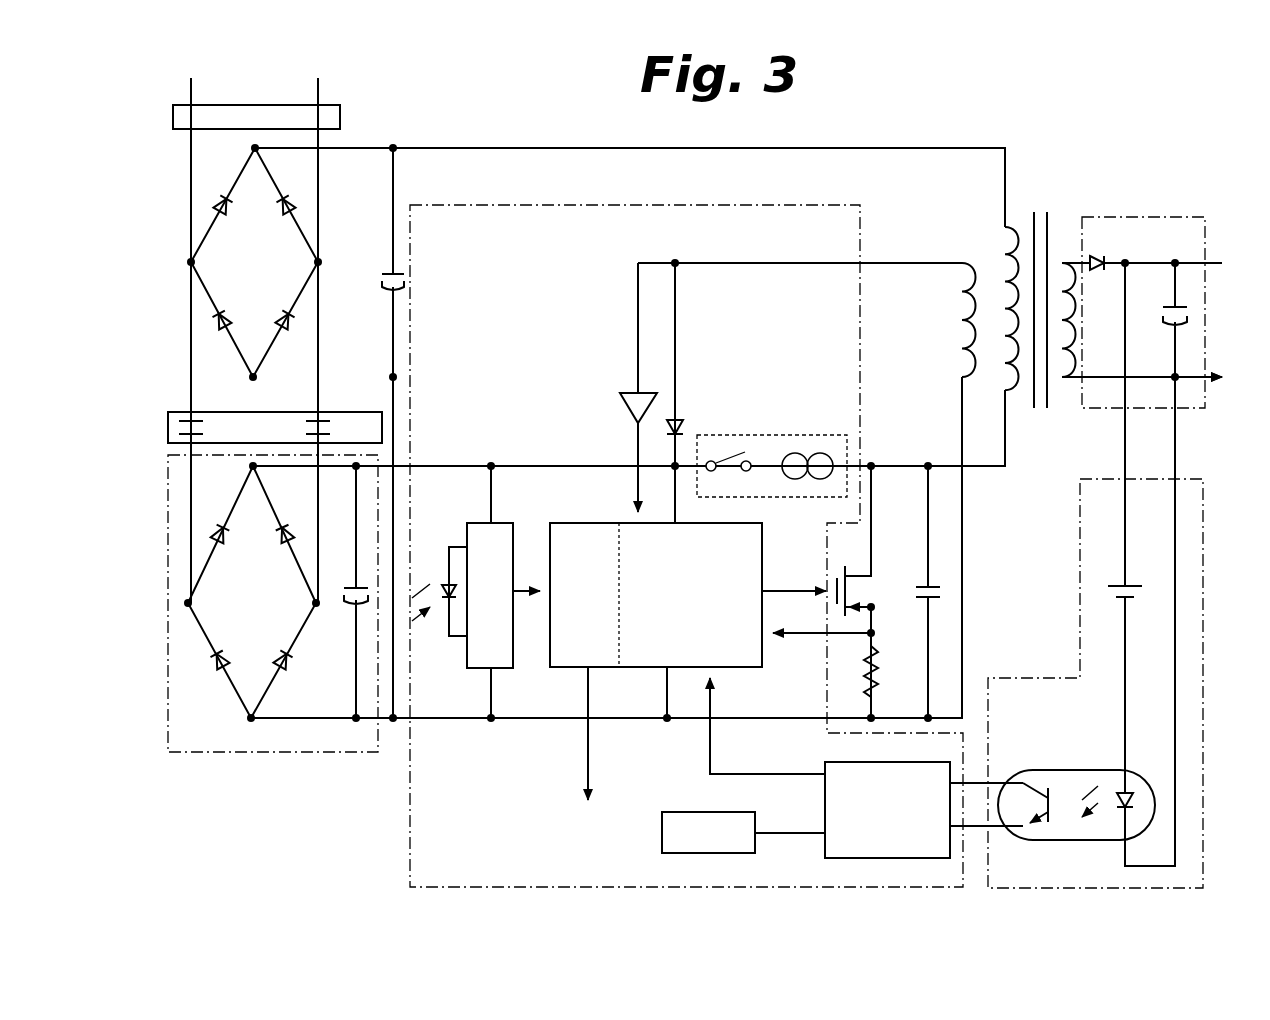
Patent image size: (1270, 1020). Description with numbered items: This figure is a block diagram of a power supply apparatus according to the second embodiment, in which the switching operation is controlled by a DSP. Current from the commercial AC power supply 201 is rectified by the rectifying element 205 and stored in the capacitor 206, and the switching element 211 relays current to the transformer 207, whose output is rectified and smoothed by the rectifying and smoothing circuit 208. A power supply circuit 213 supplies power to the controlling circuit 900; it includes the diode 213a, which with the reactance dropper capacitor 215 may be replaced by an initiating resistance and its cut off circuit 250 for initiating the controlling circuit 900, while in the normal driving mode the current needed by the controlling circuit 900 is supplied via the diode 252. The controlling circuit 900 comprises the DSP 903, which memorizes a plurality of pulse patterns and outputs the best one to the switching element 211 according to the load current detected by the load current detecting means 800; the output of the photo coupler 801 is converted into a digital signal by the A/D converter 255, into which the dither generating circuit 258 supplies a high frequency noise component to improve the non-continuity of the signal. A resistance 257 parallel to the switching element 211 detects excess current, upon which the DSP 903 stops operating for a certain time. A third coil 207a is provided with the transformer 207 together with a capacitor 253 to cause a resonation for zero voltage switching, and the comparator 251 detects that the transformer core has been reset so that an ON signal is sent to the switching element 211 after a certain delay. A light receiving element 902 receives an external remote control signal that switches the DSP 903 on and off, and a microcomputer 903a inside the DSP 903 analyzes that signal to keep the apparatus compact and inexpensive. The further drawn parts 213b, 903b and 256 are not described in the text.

The commercial AC power supply 201 is at (348, 113).
The rectifying element 205 is at (284, 182).
The capacitor 206 is at (382, 282).
The capacitor (reactance dropper) 215 is at (340, 412).
The power supply circuit 213 is at (218, 755).
The diode 213a is at (268, 702).
The auxiliary smoothing capacitor 213b is at (356, 650).
The controlling circuit 900 is at (662, 205).
The comparator 251 is at (637, 352).
The diode 252 is at (677, 392).
The initiating resistance and its cut off circuit 250 is at (776, 435).
The DSP 903 is at (600, 523).
The microcomputer 903a is at (565, 668).
The output section of control IC 903b is at (652, 668).
The switching element 211 is at (810, 590).
The capacitor 253 is at (920, 590).
The resistance 257 is at (899, 671).
The light receiving element 902 is at (467, 668).
The data output signal 256 is at (600, 753).
The dither generating circuit 258 is at (715, 812).
The A/D converter 255 is at (895, 858).
The third coil 207a is at (955, 263).
The transformer 207 is at (1047, 215).
The rectifying and smoothing circuit 208 is at (1152, 217).
The load current detecting means 800 is at (1203, 740).
The photo coupler 801 is at (1078, 770).